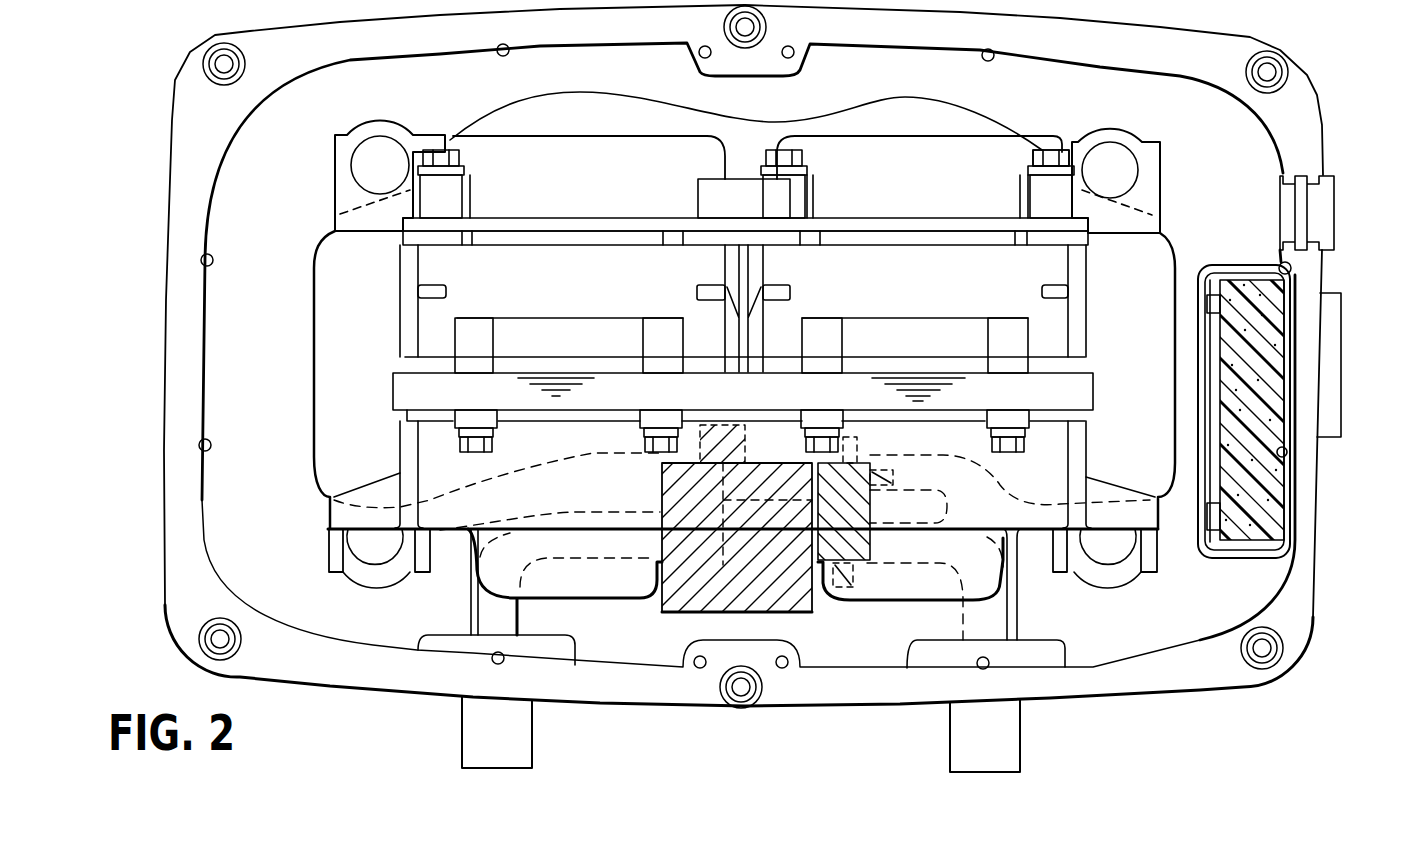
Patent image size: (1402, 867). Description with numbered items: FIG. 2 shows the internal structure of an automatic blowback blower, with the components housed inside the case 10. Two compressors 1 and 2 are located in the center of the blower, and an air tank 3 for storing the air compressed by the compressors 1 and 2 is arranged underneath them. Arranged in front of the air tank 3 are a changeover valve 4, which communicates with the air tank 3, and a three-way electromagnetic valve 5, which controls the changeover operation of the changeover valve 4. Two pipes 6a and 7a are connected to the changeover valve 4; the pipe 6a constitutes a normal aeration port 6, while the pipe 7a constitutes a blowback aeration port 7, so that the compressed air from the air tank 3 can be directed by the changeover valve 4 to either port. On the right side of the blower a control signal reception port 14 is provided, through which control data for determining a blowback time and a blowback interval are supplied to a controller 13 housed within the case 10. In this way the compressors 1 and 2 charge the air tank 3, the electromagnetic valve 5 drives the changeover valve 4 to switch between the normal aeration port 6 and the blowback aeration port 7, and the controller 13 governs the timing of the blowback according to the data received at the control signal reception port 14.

The compressor 1 is at (647, 152).
The compressor 2 is at (841, 152).
The air tank 3 is at (988, 122).
The changeover valve 4 is at (670, 598).
The three-way electromagnetic valve 5 is at (858, 602).
The normal aeration port 6 is at (1008, 742).
The pipe 6a is at (1018, 622).
The blowback aeration port 7 is at (462, 740).
The pipe 7a is at (470, 603).
The case 10 is at (177, 214).
The controller 13 is at (1237, 553).
The control signal reception port 14 is at (1341, 410).